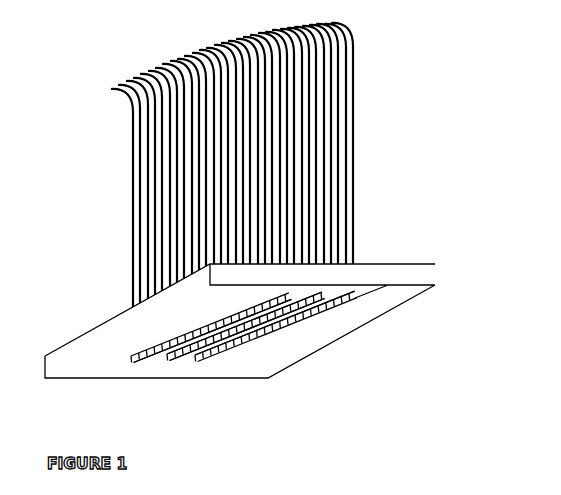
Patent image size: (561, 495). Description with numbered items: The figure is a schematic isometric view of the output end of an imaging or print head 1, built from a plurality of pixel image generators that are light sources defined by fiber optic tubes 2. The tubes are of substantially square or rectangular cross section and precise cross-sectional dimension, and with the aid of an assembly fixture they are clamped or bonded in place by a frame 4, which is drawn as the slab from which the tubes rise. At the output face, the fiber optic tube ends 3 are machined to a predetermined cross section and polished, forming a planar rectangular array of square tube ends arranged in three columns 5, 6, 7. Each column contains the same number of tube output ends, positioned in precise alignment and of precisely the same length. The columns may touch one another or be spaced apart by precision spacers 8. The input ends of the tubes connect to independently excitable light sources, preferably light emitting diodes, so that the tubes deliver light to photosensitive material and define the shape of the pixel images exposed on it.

The print head 1 is at (78, 279).
The fiber optic tubes 2 is at (366, 171).
The output ends of the fiber optic tubes 3 is at (224, 369).
The frame 4 is at (372, 265).
The column 5 is at (197, 366).
The column 6 is at (165, 362).
The column 7 is at (132, 366).
The precision spacers 8 is at (177, 372).